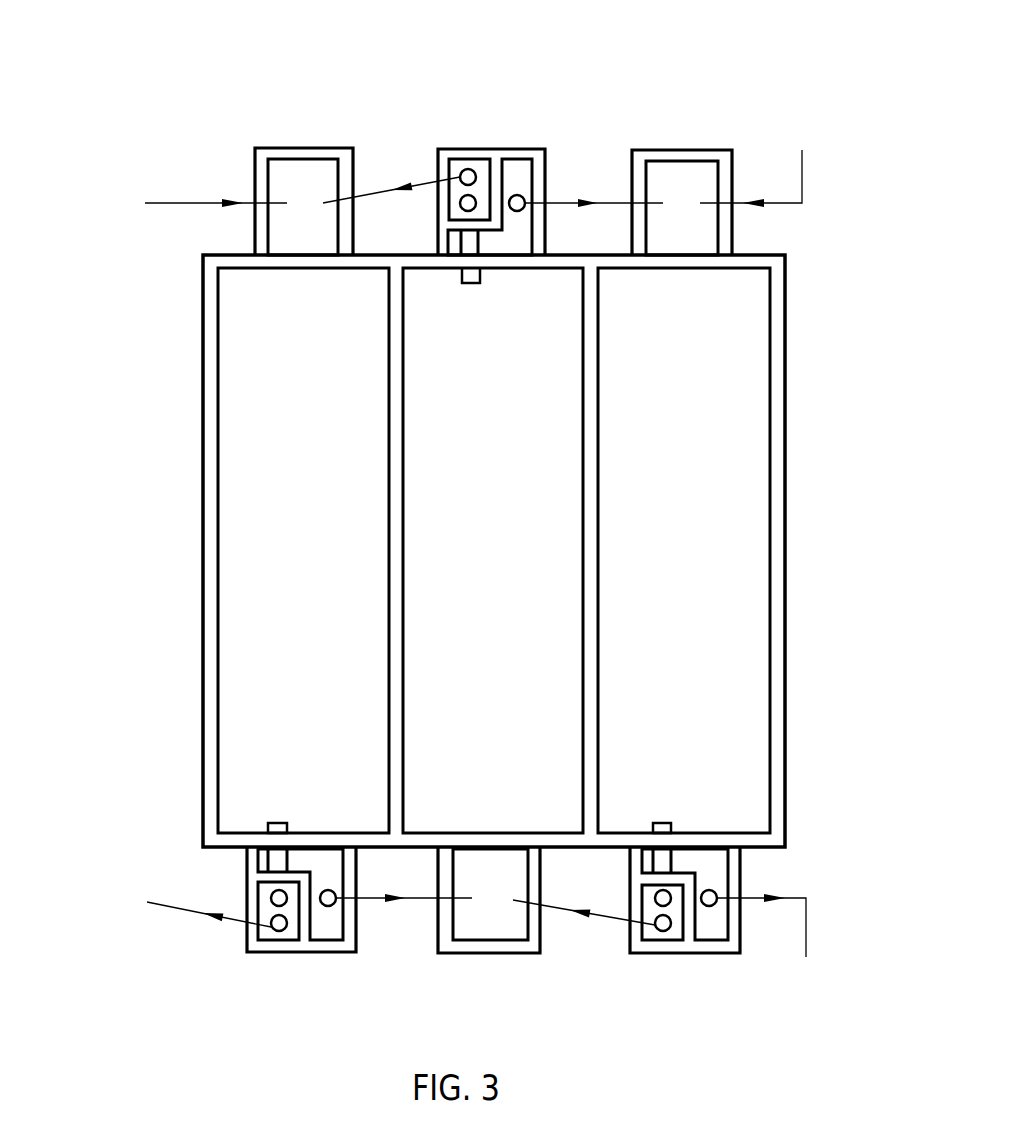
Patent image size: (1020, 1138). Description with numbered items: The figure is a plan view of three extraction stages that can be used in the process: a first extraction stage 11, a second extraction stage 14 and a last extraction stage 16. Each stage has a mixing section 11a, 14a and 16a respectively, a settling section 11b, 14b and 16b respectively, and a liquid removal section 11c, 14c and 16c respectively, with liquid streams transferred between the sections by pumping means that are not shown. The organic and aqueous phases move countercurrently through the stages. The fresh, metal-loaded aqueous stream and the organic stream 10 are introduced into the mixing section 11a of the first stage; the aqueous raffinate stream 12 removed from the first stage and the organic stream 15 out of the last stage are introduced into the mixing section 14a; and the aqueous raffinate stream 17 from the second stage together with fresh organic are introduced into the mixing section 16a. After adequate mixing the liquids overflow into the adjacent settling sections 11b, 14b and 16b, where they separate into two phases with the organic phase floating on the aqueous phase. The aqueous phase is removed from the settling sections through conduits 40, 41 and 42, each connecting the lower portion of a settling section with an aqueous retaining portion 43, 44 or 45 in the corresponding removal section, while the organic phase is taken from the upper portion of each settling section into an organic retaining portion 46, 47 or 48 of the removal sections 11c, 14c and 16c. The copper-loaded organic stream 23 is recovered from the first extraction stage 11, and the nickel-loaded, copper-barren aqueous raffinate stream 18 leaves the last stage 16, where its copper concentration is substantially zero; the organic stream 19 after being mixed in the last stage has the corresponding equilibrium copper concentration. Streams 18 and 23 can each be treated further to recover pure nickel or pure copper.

The organic stream 10 is at (600, 203).
The first extraction stage 11 is at (717, 546).
The mixing section 11a is at (688, 150).
The settling section 11b is at (702, 553).
The liquid removal section 11c is at (712, 950).
The aqueous raffinate stream 12 is at (596, 918).
The second extraction stage 14 is at (624, 535).
The mixing section 14a is at (483, 938).
The settling section 14b is at (518, 553).
The liquid removal section 14c is at (510, 149).
The organic stream 15 is at (413, 899).
The last extraction stage 16 is at (270, 539).
The mixing section 16a is at (315, 148).
The settling section 16b is at (326, 553).
The liquid removal section 16c is at (335, 950).
The aqueous raffinate stream 17 is at (374, 191).
The aqueous raffinate stream 18 is at (223, 918).
The organic stream 19 is at (243, 203).
The copper-loaded organic stream 23 is at (806, 898).
The conduit 40 is at (662, 822).
The conduit 41 is at (472, 284).
The conduit 42 is at (272, 822).
The aqueous retaining portion 43 is at (654, 938).
The aqueous retaining portion 44 is at (471, 159).
The aqueous retaining portion 45 is at (268, 937).
The organic retaining portion 46 is at (716, 873).
The organic retaining portion 47 is at (524, 177).
The organic retaining portion 48 is at (337, 872).